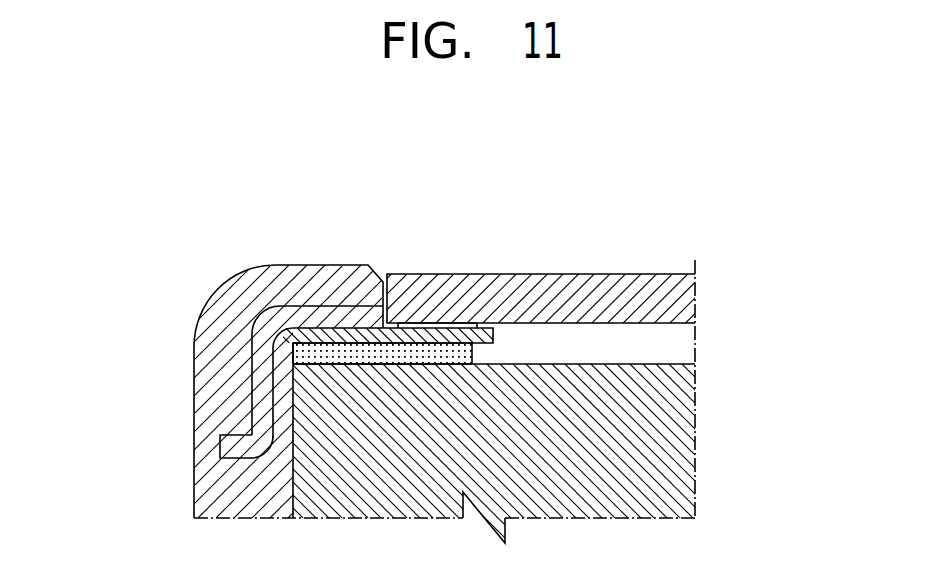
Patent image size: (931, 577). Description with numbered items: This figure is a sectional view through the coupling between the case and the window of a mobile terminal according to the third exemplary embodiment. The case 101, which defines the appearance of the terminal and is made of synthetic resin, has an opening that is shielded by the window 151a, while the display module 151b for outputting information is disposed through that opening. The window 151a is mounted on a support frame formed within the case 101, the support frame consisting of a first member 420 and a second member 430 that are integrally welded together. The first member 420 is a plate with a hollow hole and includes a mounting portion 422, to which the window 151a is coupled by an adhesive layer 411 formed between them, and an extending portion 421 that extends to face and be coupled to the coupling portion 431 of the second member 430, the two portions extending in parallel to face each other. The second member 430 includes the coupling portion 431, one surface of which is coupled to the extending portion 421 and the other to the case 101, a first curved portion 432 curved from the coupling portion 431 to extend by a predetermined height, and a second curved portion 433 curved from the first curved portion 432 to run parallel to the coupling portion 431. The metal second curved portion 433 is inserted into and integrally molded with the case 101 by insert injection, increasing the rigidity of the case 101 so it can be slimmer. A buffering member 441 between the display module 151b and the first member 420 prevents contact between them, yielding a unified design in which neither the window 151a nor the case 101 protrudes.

The case 101 is at (217, 487).
The second member 430 is at (212, 379).
The coupling portion 431 is at (327, 313).
The first curved portion 432 is at (260, 380).
The second curved portion 433 is at (181, 450).
The first member 420 is at (391, 260).
The extending portion 421 is at (364, 328).
The mounting portion 422 is at (416, 327).
The adhesive layer 411 is at (462, 327).
The buffering member 441 is at (473, 352).
The window 151a is at (688, 303).
The display module 151b is at (688, 440).